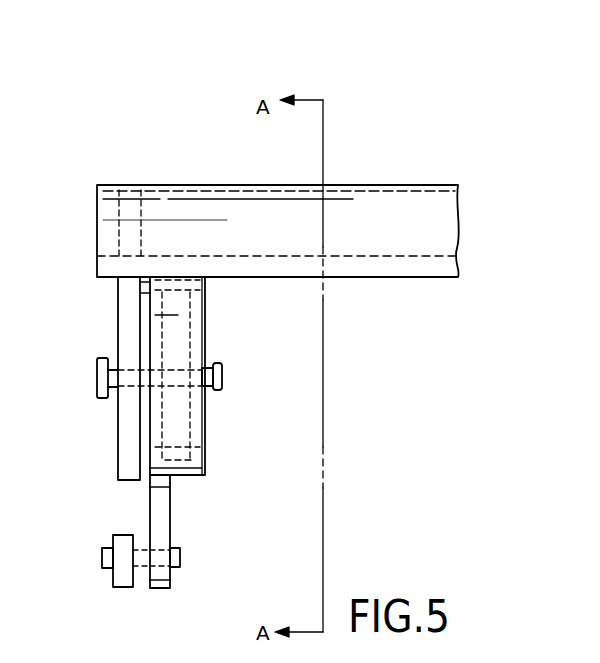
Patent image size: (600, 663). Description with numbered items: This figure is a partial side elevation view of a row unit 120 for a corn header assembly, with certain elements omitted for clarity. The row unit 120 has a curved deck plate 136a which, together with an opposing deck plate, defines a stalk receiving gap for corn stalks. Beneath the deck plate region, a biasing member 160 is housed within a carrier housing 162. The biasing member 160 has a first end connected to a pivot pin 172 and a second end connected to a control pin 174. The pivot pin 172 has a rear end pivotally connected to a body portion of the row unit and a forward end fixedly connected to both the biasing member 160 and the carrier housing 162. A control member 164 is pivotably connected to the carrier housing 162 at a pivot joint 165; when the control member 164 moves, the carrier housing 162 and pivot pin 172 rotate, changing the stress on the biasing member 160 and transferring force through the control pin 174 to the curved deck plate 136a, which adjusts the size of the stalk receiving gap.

The row unit 120 is at (235, 45).
The first deck plate 136a is at (110, 183).
The control pin 174 is at (188, 292).
The pivot pin 172 is at (107, 360).
The biasing member 160 is at (194, 409).
The carrier housing 162 is at (197, 448).
The pivot joint 165 is at (182, 553).
The control member 164 is at (115, 590).